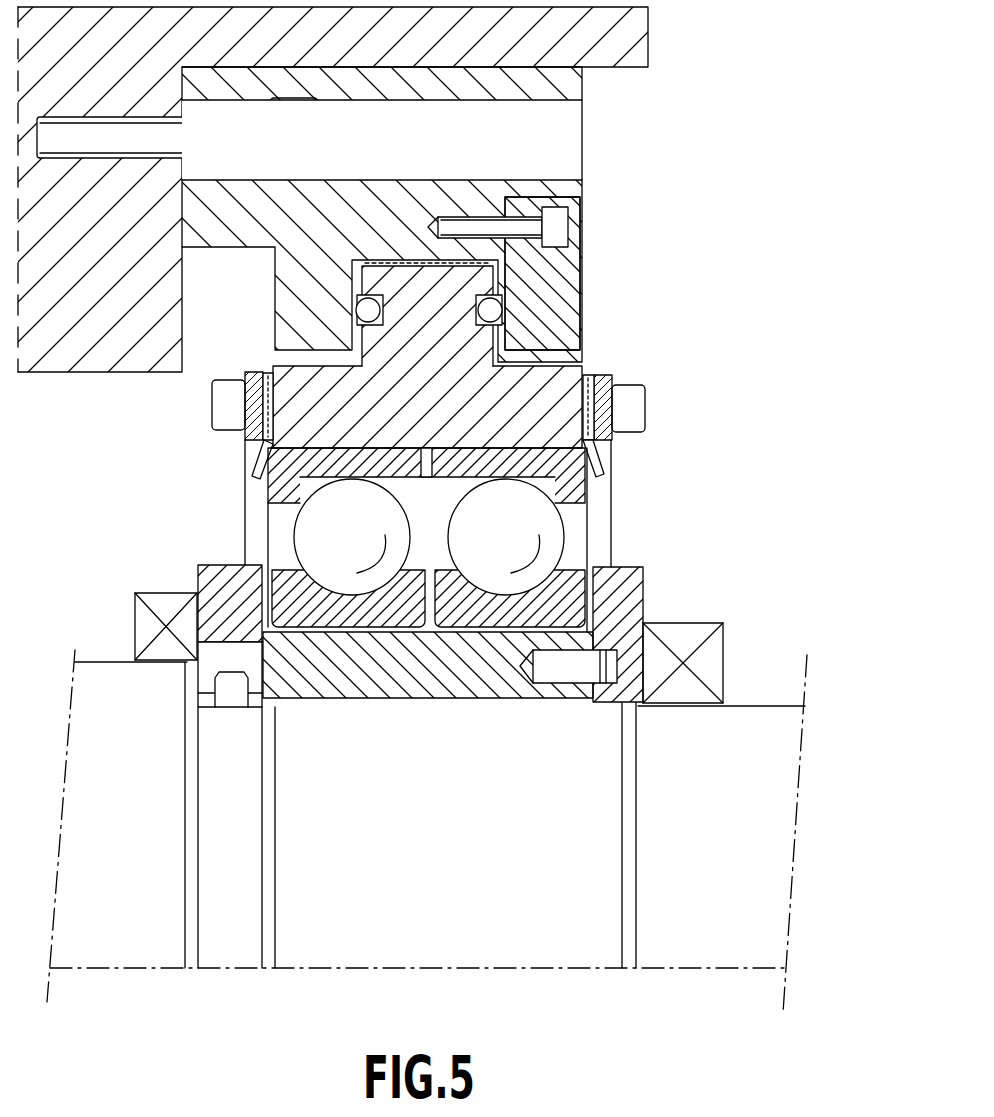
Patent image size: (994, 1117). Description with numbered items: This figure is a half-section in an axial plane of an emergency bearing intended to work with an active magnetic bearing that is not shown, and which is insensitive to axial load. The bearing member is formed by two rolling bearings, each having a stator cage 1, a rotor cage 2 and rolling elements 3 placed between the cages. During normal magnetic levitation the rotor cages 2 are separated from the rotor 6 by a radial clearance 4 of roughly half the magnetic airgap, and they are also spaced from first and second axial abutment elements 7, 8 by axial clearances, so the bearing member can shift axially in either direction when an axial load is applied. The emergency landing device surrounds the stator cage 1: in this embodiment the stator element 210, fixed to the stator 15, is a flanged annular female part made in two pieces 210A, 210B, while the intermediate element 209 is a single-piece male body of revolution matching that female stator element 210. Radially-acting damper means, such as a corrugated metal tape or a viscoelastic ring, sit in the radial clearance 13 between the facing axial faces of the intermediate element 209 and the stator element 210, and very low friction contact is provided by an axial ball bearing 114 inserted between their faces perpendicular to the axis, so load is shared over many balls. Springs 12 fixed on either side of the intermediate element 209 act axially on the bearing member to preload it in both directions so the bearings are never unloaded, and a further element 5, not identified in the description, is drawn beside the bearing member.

The stator 15 is at (633, 40).
The stator element 210 is at (442, 214).
The first piece of the stator element 210A is at (395, 208).
The second piece of the stator element 210B is at (560, 273).
The intermediate element 209 is at (558, 362).
The radial clearance 13 is at (410, 283).
The axial ball bearing 114 is at (490, 323).
The springs 12 is at (257, 452).
The stator cage 1 is at (592, 488).
The rotor cage 2 is at (573, 580).
The rolling elements 3 is at (547, 540).
The radial clearance 4 is at (478, 627).
The sealing ring 5 is at (240, 563).
The second axial abutment element 8 is at (197, 582).
The first axial abutment element 7 is at (635, 650).
The rotor 6 is at (778, 852).